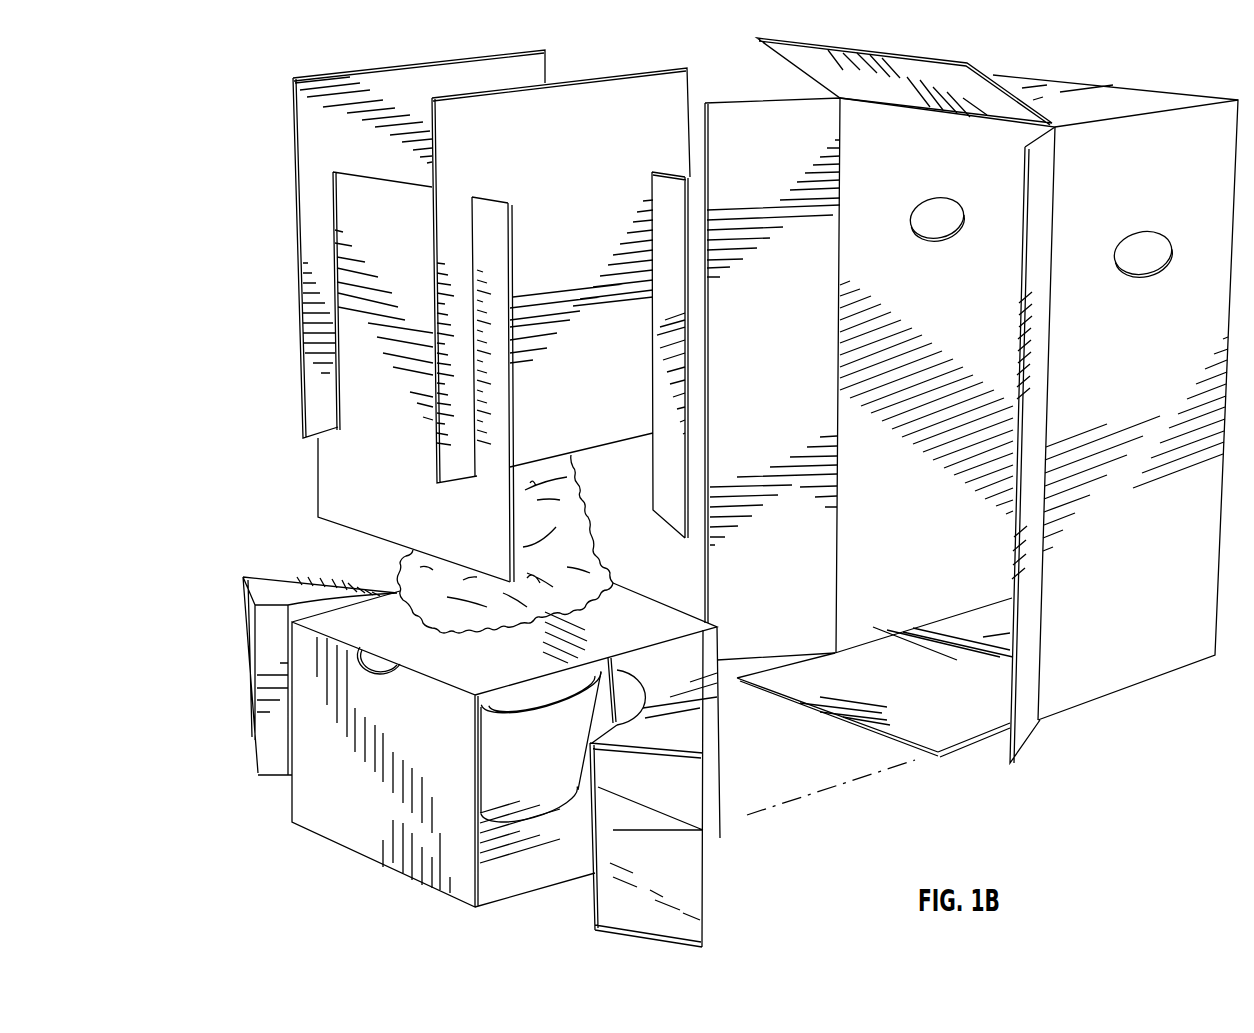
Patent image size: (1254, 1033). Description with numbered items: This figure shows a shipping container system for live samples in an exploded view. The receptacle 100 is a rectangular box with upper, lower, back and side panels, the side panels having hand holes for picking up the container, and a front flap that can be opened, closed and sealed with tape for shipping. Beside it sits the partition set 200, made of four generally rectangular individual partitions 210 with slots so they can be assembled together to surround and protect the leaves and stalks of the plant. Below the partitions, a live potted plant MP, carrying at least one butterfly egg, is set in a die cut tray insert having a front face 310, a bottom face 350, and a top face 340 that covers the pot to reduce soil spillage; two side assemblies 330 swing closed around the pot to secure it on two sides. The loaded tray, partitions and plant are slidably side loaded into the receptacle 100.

The receptacle 100 is at (994, 68).
The partition set 200 is at (448, 316).
The individual partition 210 is at (355, 159).
The front face 310 is at (506, 745).
The side assembly 330 is at (237, 688).
The top face 340 is at (498, 671).
The bottom face 350 is at (540, 886).
The live potted plant MP is at (463, 592).